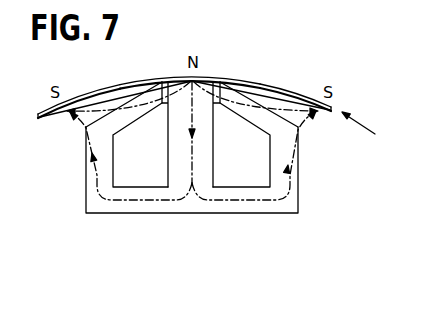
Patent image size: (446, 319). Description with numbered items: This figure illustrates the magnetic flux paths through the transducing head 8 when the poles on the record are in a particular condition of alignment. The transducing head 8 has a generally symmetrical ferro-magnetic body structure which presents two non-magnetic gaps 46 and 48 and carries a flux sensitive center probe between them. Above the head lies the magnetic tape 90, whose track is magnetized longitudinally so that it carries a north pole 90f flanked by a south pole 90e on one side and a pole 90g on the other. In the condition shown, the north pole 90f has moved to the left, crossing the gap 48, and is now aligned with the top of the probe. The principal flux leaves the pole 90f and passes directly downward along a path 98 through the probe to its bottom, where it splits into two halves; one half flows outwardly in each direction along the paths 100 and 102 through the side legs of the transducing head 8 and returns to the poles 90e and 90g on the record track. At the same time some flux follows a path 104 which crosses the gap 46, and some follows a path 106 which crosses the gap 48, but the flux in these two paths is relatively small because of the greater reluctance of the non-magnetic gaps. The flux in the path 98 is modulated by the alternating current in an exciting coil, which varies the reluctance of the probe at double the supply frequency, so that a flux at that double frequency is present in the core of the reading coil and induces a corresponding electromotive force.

The transducing head 8 is at (70, 190).
The non-magnetic gap 46 is at (165, 106).
The non-magnetic gap 48 is at (217, 106).
The magnetic tape 90 is at (196, 101).
The south pole 90e is at (58, 114).
The north pole 90f is at (192, 80).
The pole 90g is at (333, 107).
The flux path 98 is at (192, 152).
The flux path 100 is at (135, 200).
The flux path 102 is at (233, 200).
The flux path 104 is at (143, 103).
The flux path 106 is at (256, 103).